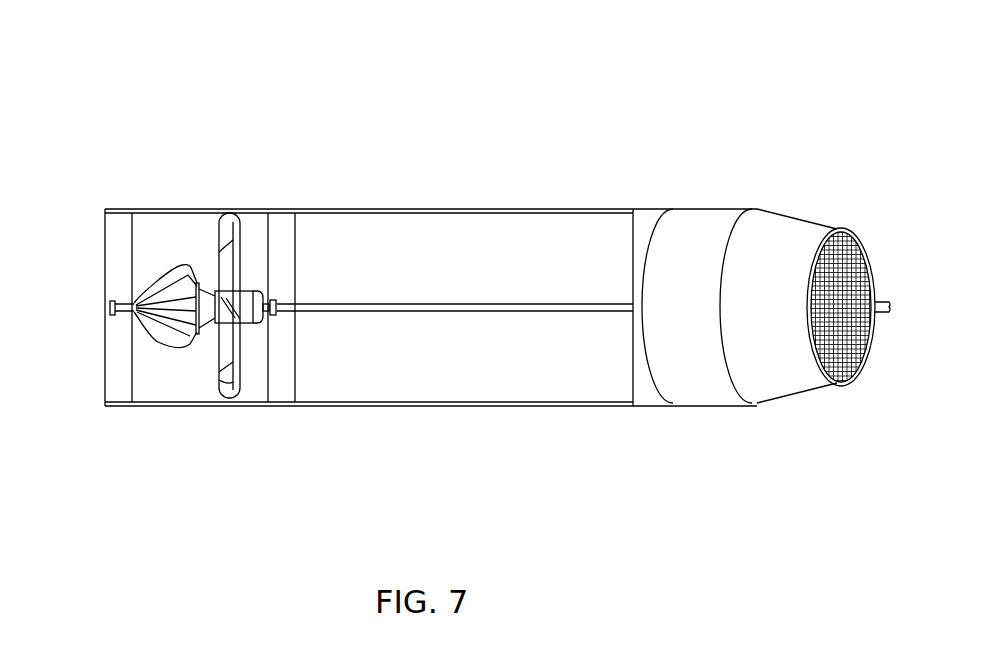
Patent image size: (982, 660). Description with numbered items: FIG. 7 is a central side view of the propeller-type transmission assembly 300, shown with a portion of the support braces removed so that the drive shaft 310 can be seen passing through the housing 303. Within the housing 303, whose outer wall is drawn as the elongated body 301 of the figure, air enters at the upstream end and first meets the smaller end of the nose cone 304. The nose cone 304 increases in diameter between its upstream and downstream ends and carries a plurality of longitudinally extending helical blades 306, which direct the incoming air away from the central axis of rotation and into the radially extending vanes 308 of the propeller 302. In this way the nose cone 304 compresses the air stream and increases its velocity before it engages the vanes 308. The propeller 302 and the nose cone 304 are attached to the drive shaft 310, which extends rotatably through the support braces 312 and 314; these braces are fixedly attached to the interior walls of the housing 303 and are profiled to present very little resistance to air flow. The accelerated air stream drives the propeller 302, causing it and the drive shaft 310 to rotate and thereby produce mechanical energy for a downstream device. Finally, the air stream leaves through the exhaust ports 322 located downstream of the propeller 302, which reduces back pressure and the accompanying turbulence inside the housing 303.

The propeller-type transmission assembly 300 is at (246, 108).
The housing 301 is at (104, 278).
The propeller 302 is at (240, 235).
The housing 303 is at (648, 218).
The nose cone 304 is at (157, 310).
The helical blades 306 is at (160, 330).
The vanes 308 is at (235, 387).
The drive shaft 310 is at (390, 307).
The support brace 312 is at (115, 222).
The support brace 314 is at (278, 232).
The exhaust ports 322 is at (845, 248).